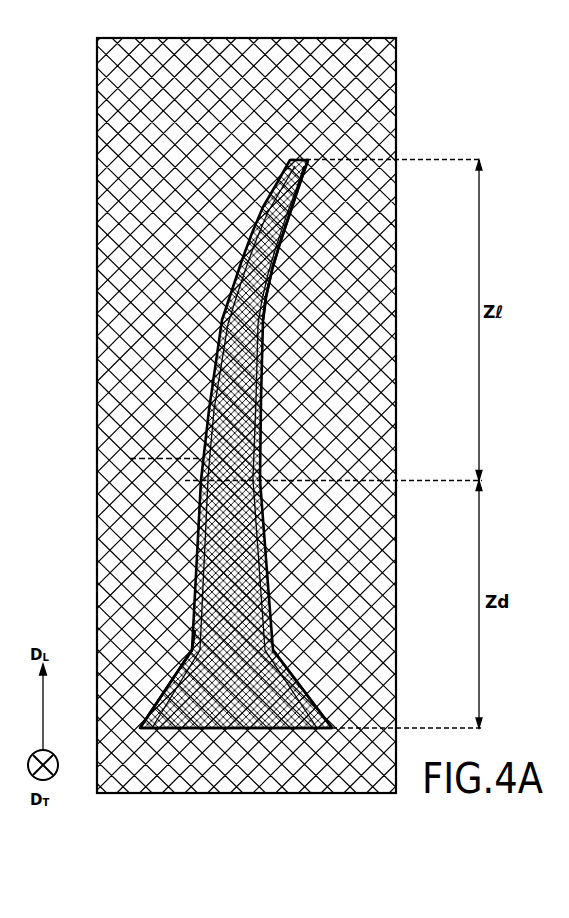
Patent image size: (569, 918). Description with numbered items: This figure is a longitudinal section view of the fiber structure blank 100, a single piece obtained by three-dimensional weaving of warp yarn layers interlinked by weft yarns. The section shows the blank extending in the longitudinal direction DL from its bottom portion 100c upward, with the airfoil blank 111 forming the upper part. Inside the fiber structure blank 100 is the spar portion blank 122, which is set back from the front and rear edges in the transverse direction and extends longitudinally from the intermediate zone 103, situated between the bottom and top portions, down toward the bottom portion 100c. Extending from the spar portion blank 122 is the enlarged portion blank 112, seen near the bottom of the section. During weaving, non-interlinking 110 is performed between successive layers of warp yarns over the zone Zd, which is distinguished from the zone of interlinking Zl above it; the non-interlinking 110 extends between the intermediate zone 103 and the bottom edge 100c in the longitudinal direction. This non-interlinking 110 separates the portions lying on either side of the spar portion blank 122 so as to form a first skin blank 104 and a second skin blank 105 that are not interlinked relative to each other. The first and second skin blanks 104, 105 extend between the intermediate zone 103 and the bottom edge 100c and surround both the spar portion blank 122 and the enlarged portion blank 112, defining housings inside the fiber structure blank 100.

The fiber structure blank 100 is at (198, 411).
The bottom portion 100c is at (332, 728).
The intermediate zone 103 is at (130, 458).
The first skin blank 104 is at (167, 690).
The second skin blank 105 is at (305, 700).
The non-interlinking 110 is at (203, 563).
The airfoil blank 111 is at (265, 430).
The enlarged portion blank 112 is at (193, 645).
The spar portion blank 122 is at (203, 527).